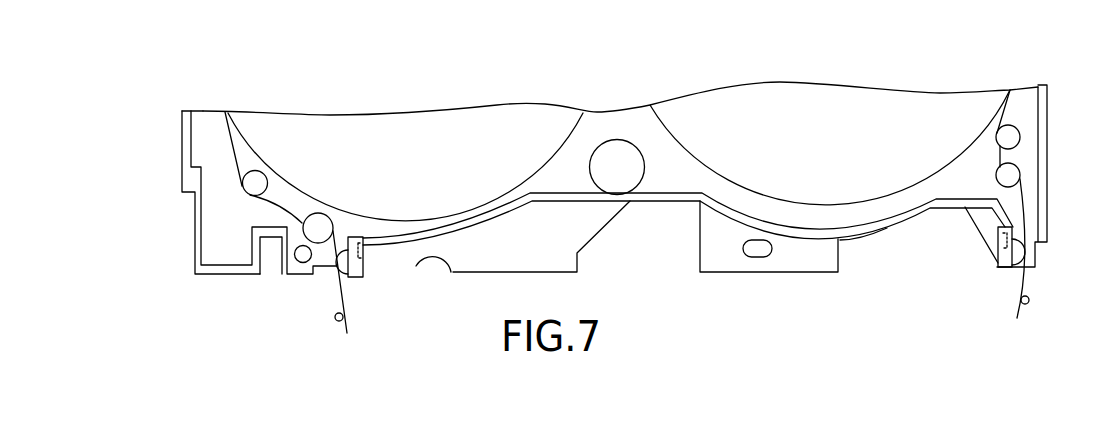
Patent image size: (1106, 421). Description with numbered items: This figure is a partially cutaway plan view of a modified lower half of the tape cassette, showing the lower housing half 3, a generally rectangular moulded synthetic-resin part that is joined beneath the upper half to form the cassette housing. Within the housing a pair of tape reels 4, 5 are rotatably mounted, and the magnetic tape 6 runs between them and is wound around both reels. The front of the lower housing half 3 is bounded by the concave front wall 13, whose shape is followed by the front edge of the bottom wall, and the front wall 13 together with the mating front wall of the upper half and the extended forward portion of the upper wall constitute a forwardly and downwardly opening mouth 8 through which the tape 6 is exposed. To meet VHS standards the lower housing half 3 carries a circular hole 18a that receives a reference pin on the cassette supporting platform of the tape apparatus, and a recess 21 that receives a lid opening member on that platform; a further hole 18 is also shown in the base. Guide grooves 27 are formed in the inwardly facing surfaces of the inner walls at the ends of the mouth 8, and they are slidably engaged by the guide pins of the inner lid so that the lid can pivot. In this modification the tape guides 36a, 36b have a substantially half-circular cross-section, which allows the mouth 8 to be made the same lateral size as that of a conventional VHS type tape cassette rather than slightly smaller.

The lower housing half 3 is at (193, 229).
The tape reel 4 is at (836, 100).
The tape reel 5 is at (419, 123).
The magnetic tape 6 is at (1025, 208).
The mouth 8 is at (641, 230).
The front wall 13 is at (887, 228).
The mounting hole 18 is at (303, 262).
The circular hole 18a is at (757, 258).
The recess 21 is at (263, 270).
The guide groove 27 is at (363, 252).
The tape guide 36a is at (1003, 268).
The tape guide 36b is at (352, 274).